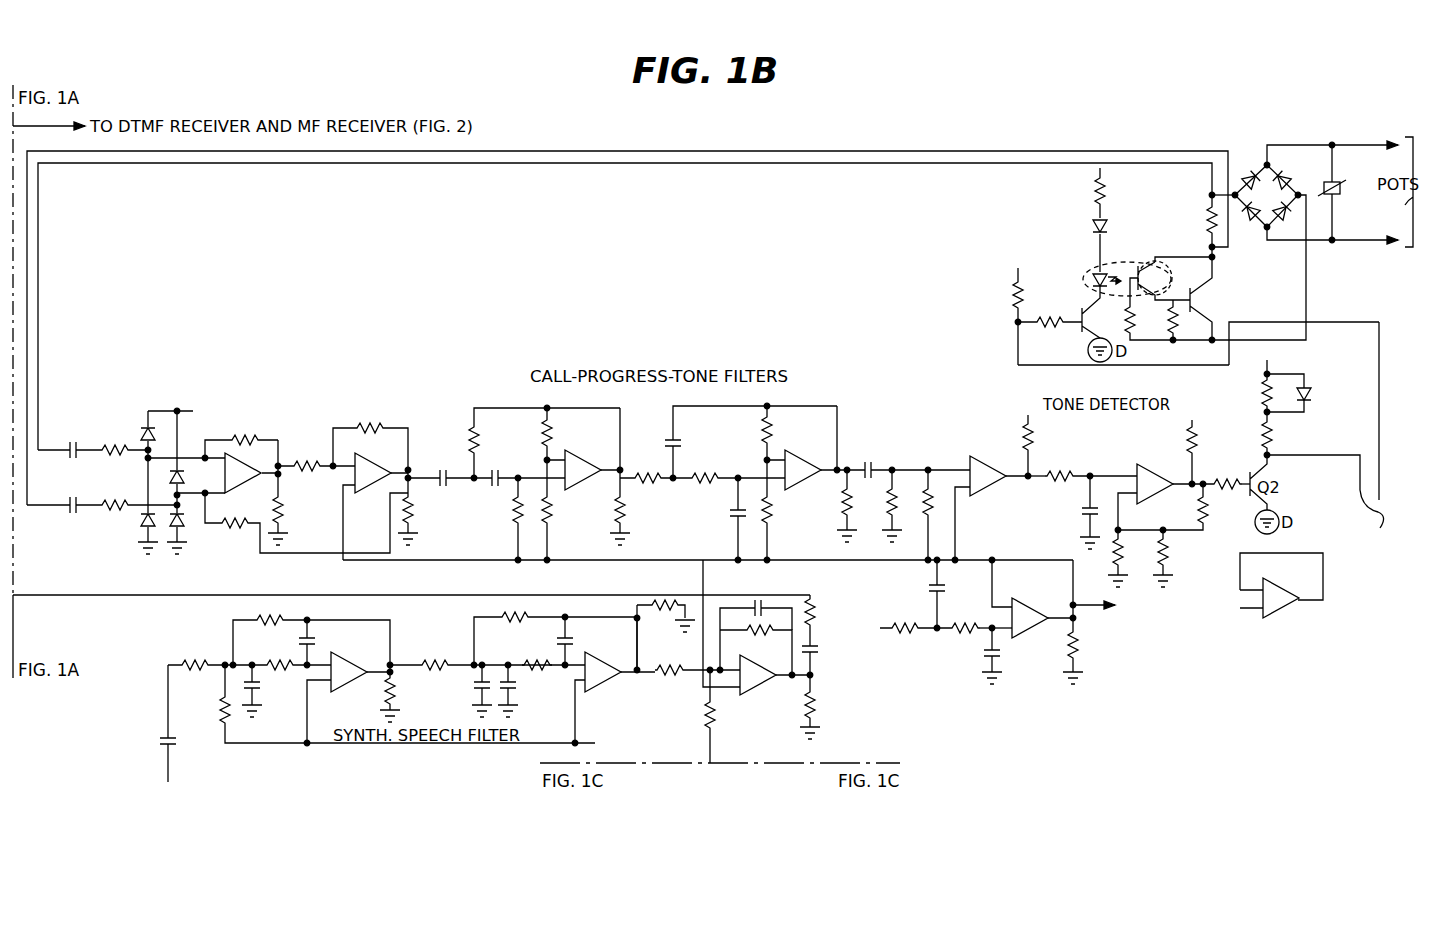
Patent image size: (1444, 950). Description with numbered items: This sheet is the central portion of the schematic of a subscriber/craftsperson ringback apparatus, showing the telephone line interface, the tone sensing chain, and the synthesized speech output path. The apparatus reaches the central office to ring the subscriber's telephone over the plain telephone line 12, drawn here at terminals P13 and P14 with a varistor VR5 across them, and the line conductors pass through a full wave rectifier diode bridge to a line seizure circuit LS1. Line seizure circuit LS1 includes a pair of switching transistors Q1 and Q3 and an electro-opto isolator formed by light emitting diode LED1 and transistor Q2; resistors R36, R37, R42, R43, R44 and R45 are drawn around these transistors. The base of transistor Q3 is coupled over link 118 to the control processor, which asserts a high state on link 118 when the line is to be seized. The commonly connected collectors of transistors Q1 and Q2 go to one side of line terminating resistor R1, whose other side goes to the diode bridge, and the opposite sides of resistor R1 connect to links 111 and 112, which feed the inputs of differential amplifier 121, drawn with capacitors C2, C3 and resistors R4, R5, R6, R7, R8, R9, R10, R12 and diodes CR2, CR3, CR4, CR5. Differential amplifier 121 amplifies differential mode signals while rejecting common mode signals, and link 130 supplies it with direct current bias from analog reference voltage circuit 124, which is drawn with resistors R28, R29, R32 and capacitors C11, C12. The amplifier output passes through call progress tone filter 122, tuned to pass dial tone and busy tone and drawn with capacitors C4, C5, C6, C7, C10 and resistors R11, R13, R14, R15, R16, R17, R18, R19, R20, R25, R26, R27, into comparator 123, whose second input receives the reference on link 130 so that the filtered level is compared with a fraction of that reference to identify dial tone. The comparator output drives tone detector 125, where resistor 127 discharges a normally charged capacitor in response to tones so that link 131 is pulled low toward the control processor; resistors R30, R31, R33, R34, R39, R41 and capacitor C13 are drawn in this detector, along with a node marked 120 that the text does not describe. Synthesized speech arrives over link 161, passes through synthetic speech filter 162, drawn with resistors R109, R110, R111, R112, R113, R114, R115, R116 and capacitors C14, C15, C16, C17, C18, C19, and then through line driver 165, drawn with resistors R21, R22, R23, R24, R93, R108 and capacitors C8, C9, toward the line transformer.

The link 111 is at (763, 151).
The link 112 is at (818, 163).
The differential amplifier 121 is at (234, 474).
The call progress tone filter 122 is at (761, 476).
The comparator 123 is at (957, 447).
The analog reference voltage circuit 124 is at (1016, 642).
The tone detector 125 is at (1150, 462).
The resistor 127 is at (1053, 483).
The ground connection 120 is at (1088, 527).
The link 130 is at (450, 560).
The link 131 is at (1325, 500).
The link 118 is at (1379, 395).
The link 161 is at (166, 754).
The synthetic speech filter 162 is at (622, 718).
The line driver 165 is at (764, 684).
The POTS line 12 is at (1358, 157).
The capacitor C2 is at (77, 445).
The capacitor C3 is at (78, 500).
The capacitor C4 is at (445, 469).
The capacitor C5 is at (518, 486).
The capacitor C6 is at (751, 442).
The capacitor C7 is at (729, 519).
The capacitor C8 is at (768, 615).
The capacitor C9 is at (821, 655).
The capacitor C10 is at (912, 462).
The capacitor C11 is at (952, 594).
The capacitor C12 is at (1008, 656).
The capacitor C13 is at (1077, 500).
The capacitor C14 is at (584, 641).
The capacitor C15 is at (526, 691).
The capacitor C16 is at (469, 691).
The capacitor C17 is at (325, 642).
The capacitor C18 is at (268, 691).
The capacitor C19 is at (187, 709).
The line terminating resistor R1 is at (1222, 213).
The resistor R4 is at (115, 443).
The resistor R5 is at (115, 498).
The resistor R6 is at (241, 436).
The resistor R7 is at (306, 523).
The resistor R8 is at (316, 456).
The resistor R9 is at (287, 520).
The resistor R10 is at (370, 437).
The resistor R11 is at (544, 443).
The resistor R12 is at (422, 520).
The resistor R13 is at (505, 519).
The resistor R14 is at (563, 451).
The resistor R15 is at (563, 527).
The resistor R16 is at (634, 507).
The resistor R17 is at (655, 469).
The resistor R18 is at (737, 469).
The resistor R19 is at (782, 450).
The resistor R20 is at (782, 527).
The resistor R21 is at (756, 641).
The resistor R22 is at (697, 659).
The resistor R23 is at (826, 615).
The resistor R24 is at (824, 707).
The resistor R25 is at (835, 506).
The resistor R26 is at (881, 506).
The resistor R27 is at (915, 515).
The resistor R28 is at (915, 620).
The resistor R29 is at (981, 620).
The resistor R30 is at (1044, 445).
The resistor R31 is at (1091, 467).
The resistor R32 is at (1088, 657).
The resistor R33 is at (1132, 558).
The resistor R34 is at (1178, 558).
The resistor R36 is at (1215, 267).
The resistor R37 is at (1188, 320).
The resistor R39 is at (1207, 452).
The resistor R41 is at (1231, 474).
The resistor R42 is at (1252, 386).
The resistor R43 is at (1283, 433).
The resistor R44 is at (1034, 316).
The resistor R45 is at (1050, 312).
The resistor R93 is at (695, 716).
The resistor R108 is at (666, 618).
The resistor R109 is at (216, 656).
The resistor R110 is at (391, 704).
The resistor R111 is at (311, 630).
The resistor R112 is at (297, 656).
The resistor R113 is at (411, 692).
The resistor R114 is at (487, 655).
The resistor R115 is at (555, 632).
The resistor R116 is at (539, 655).
The diode CR2 is at (162, 430).
The diode CR3 is at (132, 502).
The diode CR4 is at (197, 453).
The diode CR5 is at (194, 524).
The switching transistor Q1 is at (1206, 298).
The transistor Q2 is at (1175, 278).
The switching transistor Q3 is at (1097, 326).
The line seizure circuit LS1 is at (1072, 232).
The light emitting diode LED1 is at (1092, 266).
The varistor VR5 is at (1345, 210).
The POTS line terminal P13 is at (1337, 230).
The POTS line terminal P14 is at (1336, 145).